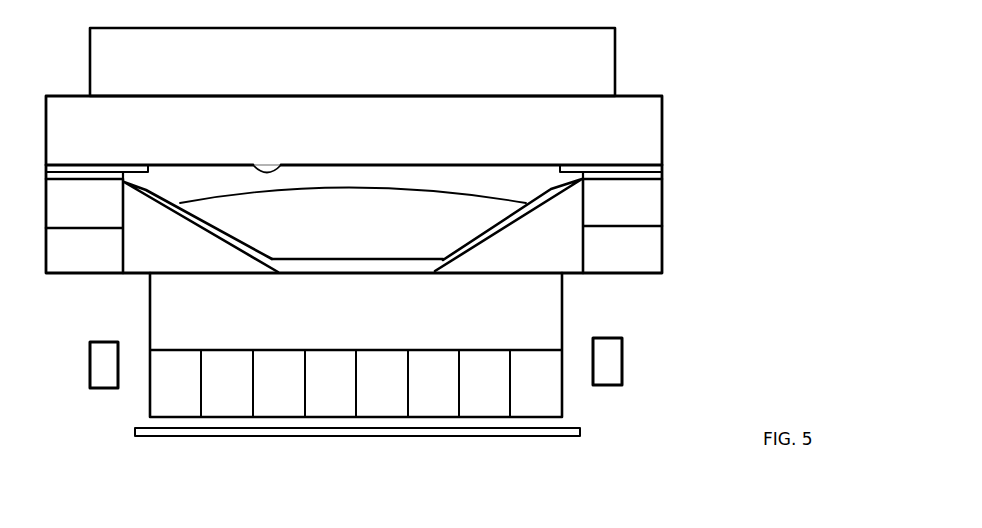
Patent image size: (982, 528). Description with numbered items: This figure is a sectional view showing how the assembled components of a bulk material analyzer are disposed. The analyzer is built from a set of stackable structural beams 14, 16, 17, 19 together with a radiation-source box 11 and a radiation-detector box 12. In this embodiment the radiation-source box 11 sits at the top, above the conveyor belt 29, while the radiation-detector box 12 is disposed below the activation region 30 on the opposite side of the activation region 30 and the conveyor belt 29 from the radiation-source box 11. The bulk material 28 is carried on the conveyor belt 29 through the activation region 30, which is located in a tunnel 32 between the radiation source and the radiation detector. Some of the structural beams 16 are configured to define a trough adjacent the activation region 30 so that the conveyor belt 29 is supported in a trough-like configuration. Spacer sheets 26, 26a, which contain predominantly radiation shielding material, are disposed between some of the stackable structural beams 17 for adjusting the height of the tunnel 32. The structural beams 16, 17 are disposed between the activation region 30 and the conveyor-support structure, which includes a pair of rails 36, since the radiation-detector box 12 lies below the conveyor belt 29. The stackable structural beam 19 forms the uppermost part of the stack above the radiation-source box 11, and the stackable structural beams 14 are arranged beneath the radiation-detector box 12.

The stackable structural beam 19 is at (615, 58).
The radiation-source box 11 is at (663, 107).
The spacer sheet 26a is at (620, 164).
The spacer sheet 26 is at (662, 170).
The stackable structural beam 17 is at (663, 201).
The tunnel 32 is at (282, 165).
The activation region 30 is at (354, 176).
The bulk material 28 is at (353, 224).
The trough-defining structural beam 16 is at (353, 225).
The conveyor belt 29 is at (560, 437).
The radiation-detector box 12 is at (356, 345).
The rail 36 is at (105, 340).
The stackable structural beam 14 is at (285, 418).